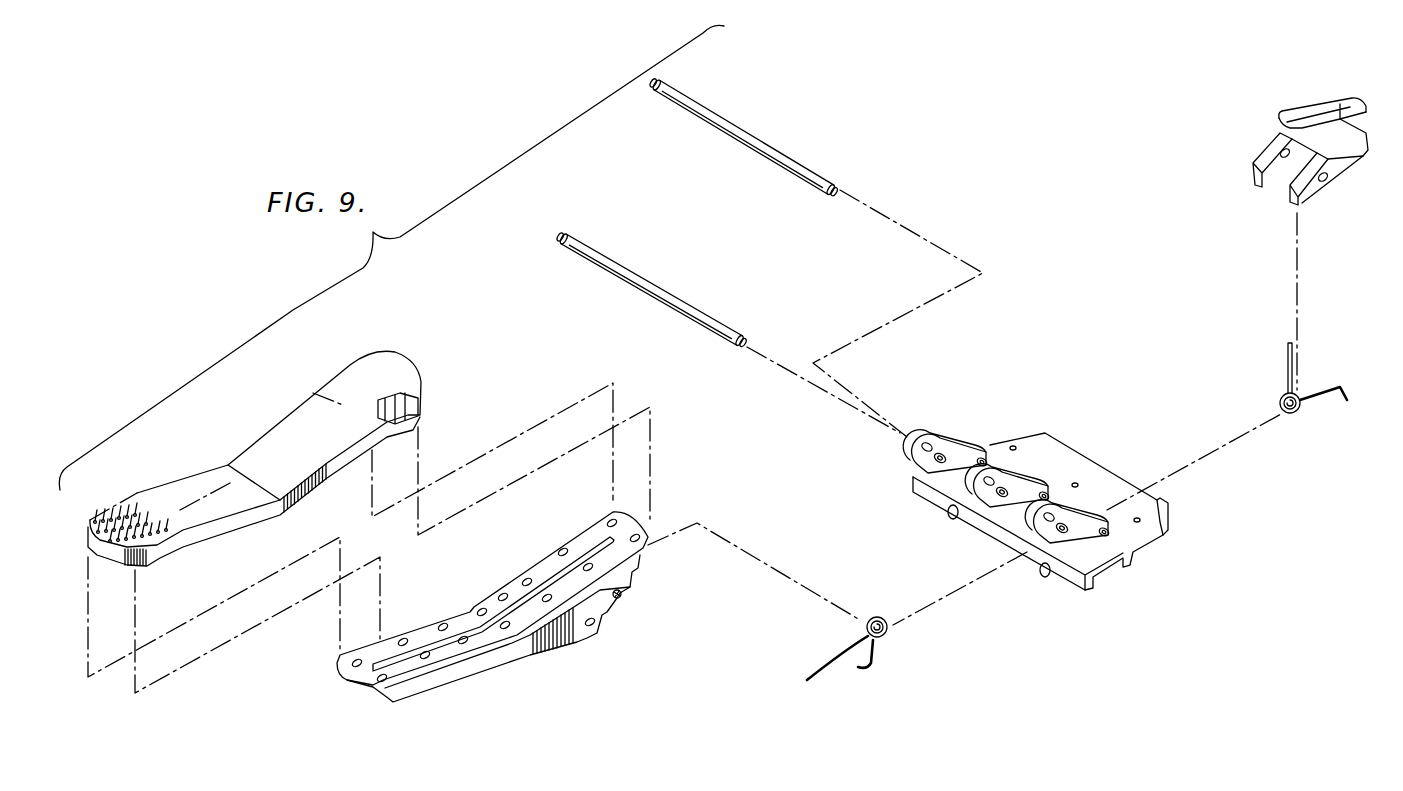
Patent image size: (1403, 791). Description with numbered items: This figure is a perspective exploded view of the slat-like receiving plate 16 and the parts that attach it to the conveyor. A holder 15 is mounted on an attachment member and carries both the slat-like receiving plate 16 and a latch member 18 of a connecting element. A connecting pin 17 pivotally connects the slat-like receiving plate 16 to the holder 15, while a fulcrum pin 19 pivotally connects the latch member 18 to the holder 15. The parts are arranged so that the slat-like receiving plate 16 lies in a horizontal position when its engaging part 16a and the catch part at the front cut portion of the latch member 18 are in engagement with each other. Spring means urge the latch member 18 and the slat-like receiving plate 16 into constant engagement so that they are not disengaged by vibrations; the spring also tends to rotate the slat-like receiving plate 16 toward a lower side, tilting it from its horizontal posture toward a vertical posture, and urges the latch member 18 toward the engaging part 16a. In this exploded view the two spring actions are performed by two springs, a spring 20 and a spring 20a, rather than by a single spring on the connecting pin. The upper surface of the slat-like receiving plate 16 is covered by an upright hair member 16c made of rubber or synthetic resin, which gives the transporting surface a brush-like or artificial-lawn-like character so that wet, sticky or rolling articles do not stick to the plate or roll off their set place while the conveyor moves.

The holder 15 is at (1137, 537).
The slat-like receiving plate 16 is at (523, 652).
The engaging part 16a is at (620, 596).
The upright hair member 16c is at (118, 515).
The connecting pin 17 is at (703, 313).
The latch member 18 is at (1353, 162).
The fulcrum pin 19 is at (808, 167).
The spring 20 is at (868, 667).
The spring 20a is at (1323, 400).